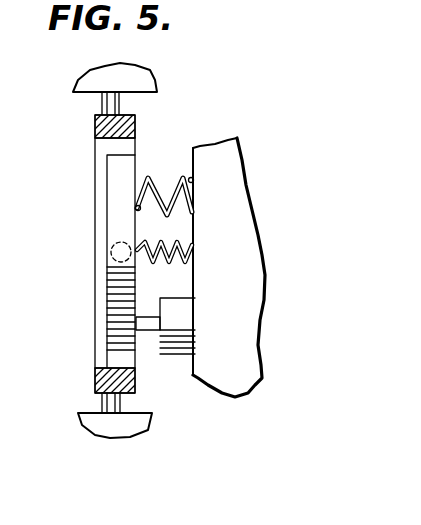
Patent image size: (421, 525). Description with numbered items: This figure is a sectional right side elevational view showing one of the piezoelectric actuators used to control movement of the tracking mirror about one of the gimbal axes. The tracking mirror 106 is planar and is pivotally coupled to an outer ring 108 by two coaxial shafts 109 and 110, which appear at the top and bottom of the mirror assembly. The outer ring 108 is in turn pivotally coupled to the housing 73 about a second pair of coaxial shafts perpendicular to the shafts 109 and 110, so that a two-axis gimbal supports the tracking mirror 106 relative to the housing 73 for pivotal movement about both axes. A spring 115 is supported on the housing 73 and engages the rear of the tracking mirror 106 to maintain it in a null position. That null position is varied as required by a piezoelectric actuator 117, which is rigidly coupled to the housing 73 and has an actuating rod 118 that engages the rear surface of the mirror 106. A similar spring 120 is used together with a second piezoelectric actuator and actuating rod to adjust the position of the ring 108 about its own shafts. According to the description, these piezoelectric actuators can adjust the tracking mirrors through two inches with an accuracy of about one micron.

The housing 73 is at (97, 72).
The tracking mirror 106 is at (105, 204).
The outer ring 108 is at (98, 380).
The shaft 109 is at (100, 102).
The shaft 110 is at (100, 404).
The spring 115 is at (163, 176).
The piezoelectric actuator 117 is at (197, 313).
The actuating rod 118 is at (150, 331).
The spring 120 is at (186, 266).